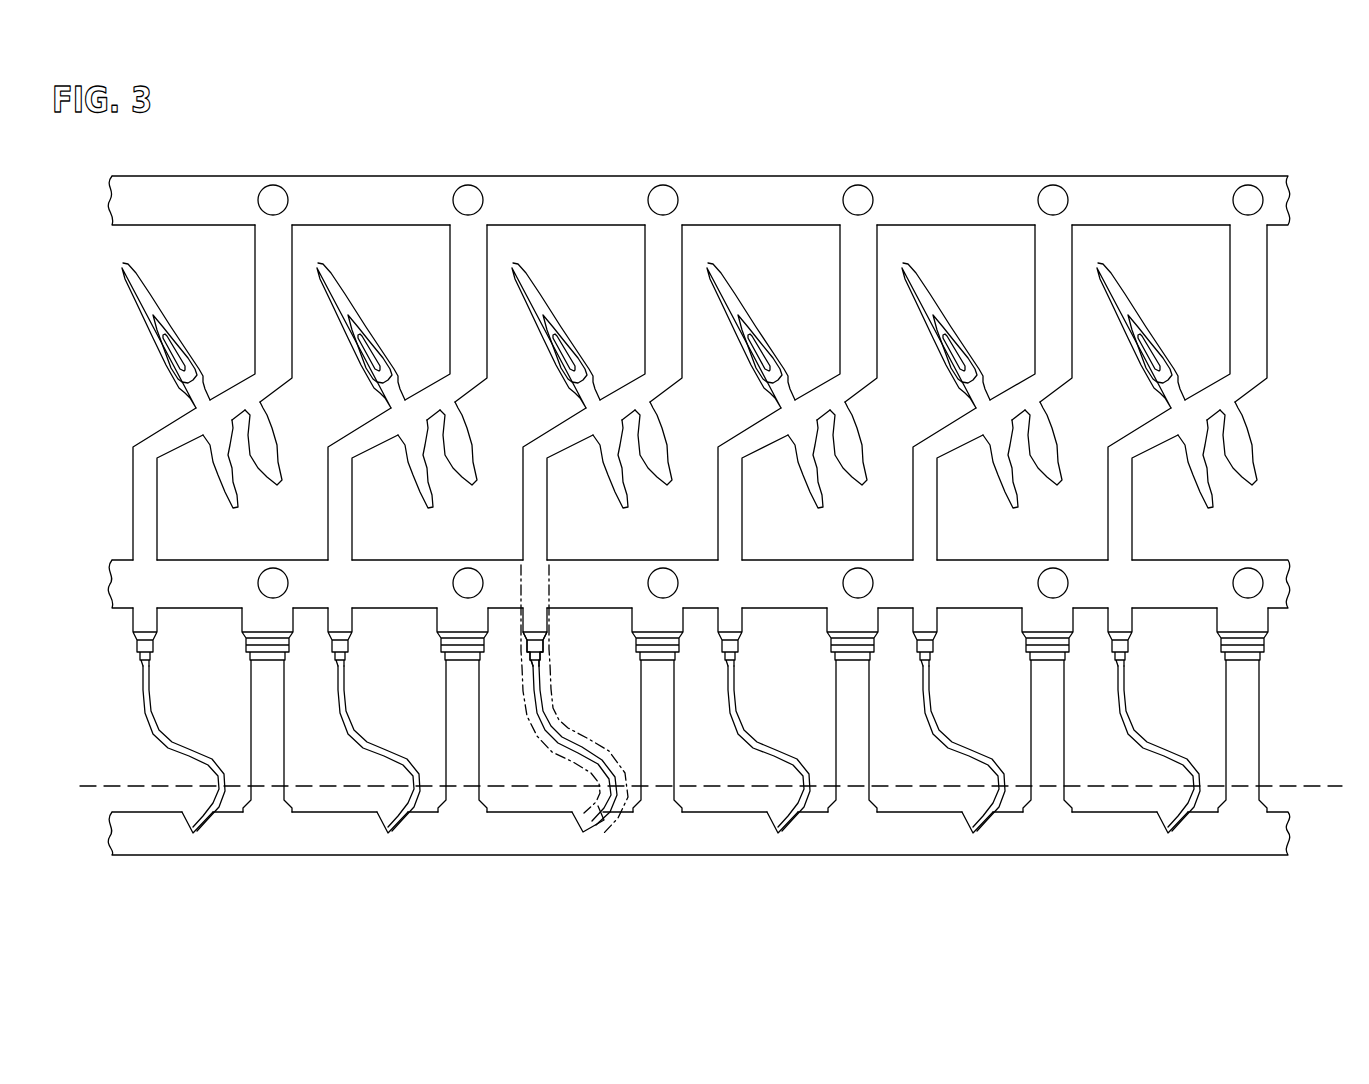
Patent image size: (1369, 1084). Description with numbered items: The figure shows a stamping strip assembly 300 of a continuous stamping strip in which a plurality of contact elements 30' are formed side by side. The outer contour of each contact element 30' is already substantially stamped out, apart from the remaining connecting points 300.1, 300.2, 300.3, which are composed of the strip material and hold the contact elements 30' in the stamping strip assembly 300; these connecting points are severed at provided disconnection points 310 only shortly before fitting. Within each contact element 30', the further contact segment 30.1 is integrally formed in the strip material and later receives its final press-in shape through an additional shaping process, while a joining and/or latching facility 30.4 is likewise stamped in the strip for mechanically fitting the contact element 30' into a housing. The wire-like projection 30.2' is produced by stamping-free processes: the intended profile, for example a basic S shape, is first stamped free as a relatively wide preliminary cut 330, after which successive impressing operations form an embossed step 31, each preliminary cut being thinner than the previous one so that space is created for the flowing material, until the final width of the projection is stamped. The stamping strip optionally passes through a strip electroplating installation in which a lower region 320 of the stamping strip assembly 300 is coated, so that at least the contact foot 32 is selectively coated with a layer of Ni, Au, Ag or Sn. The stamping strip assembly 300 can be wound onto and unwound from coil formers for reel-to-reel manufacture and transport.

The stamping strip assembly 300 is at (1004, 150).
The contact element 30' is at (714, 532).
The connecting point 300.1 is at (1145, 202).
The connecting point 300.2 is at (1172, 583).
The connecting point 300.3 is at (1220, 838).
The further contact segment 30.1 is at (530, 290).
The joining facility and/or latching facility 30.4 is at (617, 492).
The embossed step 31 is at (537, 645).
The wire-like projection 30.2' is at (555, 783).
The contact foot 32 is at (604, 820).
The disconnection point 310 is at (648, 390).
The preliminary cut 330 is at (537, 735).
The lower region 320 is at (1298, 786).